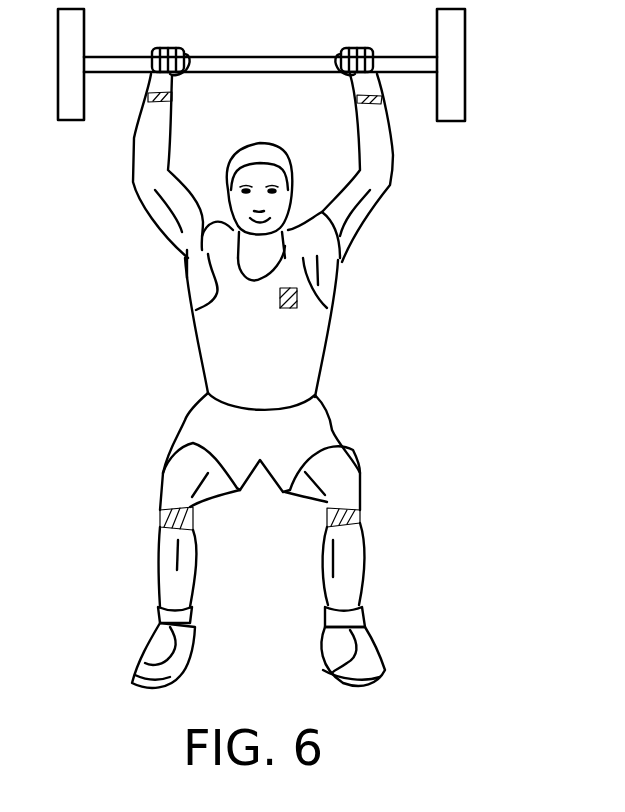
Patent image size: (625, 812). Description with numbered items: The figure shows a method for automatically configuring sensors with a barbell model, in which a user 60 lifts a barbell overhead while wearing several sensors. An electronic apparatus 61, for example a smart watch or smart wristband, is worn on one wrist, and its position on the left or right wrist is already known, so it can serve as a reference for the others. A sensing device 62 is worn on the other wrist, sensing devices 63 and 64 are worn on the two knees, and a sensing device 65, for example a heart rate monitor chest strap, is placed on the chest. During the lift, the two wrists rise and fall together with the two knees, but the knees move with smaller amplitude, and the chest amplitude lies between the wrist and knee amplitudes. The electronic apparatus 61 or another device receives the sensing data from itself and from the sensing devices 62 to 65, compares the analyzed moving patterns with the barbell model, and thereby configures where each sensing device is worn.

The user 60 is at (210, 338).
The electronic apparatus 61 is at (376, 98).
The sensing device 62 is at (147, 97).
The sensing device 63 is at (365, 515).
The sensing device 64 is at (156, 518).
The sensing device 65 is at (297, 300).